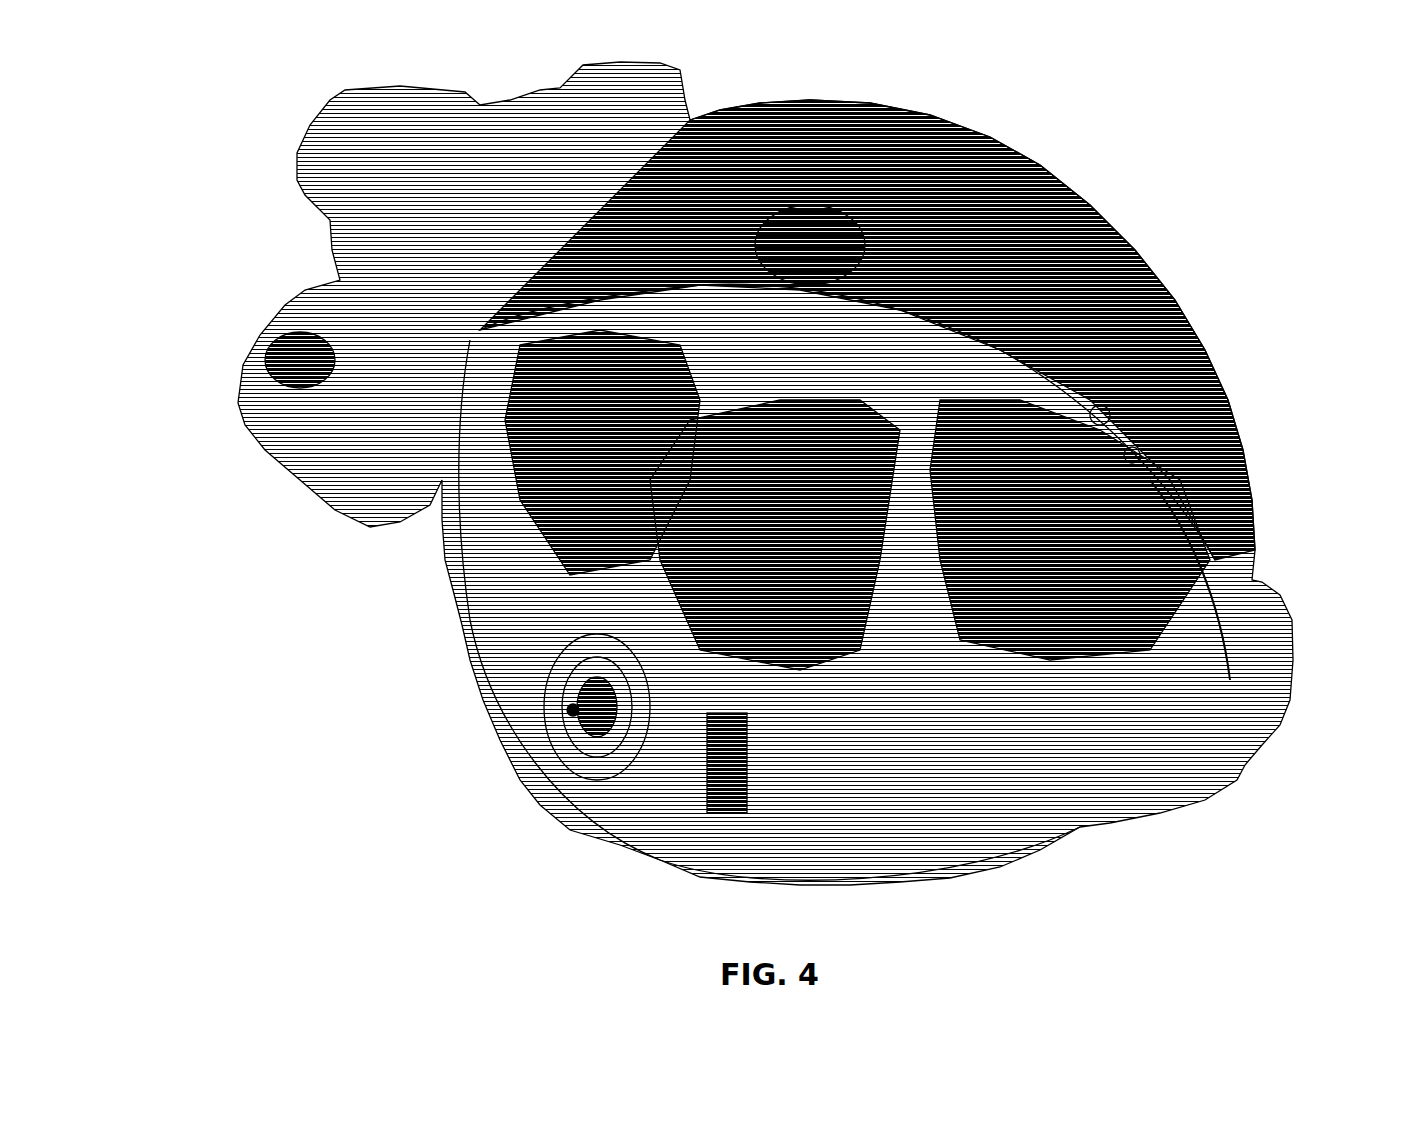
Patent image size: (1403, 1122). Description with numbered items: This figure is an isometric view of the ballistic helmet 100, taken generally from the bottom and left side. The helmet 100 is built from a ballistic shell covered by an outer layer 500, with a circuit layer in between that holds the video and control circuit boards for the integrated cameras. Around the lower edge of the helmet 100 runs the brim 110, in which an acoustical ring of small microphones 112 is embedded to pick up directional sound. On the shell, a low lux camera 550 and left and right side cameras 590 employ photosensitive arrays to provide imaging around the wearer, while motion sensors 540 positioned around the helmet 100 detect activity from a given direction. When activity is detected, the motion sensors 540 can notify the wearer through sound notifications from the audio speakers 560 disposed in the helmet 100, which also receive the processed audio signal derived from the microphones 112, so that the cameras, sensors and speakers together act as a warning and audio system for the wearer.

The ballistic helmet 100 is at (1243, 196).
The brim 110 is at (470, 625).
The microphones 112 is at (1177, 526).
The outer layer 500 is at (1070, 200).
The motion sensors 540 is at (1132, 453).
The low lux camera 550 is at (806, 220).
The audio speakers 560 is at (550, 718).
The side cameras 590 is at (1105, 410).